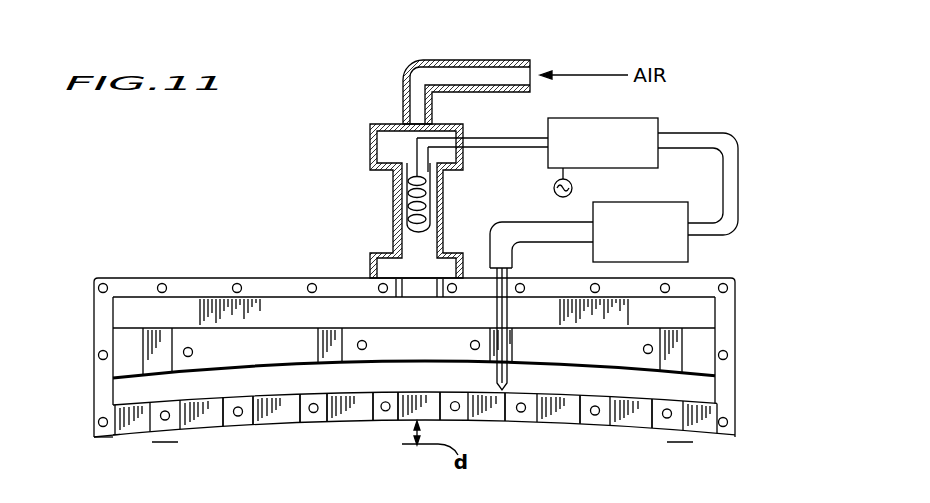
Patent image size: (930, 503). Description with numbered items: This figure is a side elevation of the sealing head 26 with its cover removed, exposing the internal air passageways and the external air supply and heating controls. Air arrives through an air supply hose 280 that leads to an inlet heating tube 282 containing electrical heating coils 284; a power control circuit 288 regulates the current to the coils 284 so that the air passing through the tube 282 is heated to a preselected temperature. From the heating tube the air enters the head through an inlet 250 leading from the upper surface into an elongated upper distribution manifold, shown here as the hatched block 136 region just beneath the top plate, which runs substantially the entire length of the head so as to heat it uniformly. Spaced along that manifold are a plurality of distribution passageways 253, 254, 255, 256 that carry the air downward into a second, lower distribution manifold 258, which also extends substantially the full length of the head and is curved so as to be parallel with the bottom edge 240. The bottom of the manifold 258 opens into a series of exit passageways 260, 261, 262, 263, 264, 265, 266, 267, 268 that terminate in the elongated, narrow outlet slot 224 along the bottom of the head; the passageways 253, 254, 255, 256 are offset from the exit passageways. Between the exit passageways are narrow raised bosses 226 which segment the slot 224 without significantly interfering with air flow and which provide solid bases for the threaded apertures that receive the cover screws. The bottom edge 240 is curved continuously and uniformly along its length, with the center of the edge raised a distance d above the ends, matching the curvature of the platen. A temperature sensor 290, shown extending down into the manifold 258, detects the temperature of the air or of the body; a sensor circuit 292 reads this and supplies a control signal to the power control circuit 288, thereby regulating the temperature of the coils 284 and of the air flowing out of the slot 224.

The sealing head 26 is at (733, 265).
The heater block 136 is at (265, 312).
The outlet slot 224 is at (121, 443).
The raised bosses 226 is at (240, 422).
The bottom edge 240 is at (105, 438).
The inlet 250 is at (410, 287).
The distribution passageway 253 is at (143, 357).
The distribution passageway 254 is at (333, 350).
The distribution passageway 255 is at (490, 355).
The distribution passageway 256 is at (660, 362).
The lower distribution manifold 258 is at (285, 385).
The exit passageway 260 is at (142, 423).
The exit passageway 261 is at (198, 418).
The exit passageway 262 is at (275, 425).
The exit passageway 263 is at (358, 410).
The exit passageway 264 is at (403, 423).
The exit passageway 265 is at (483, 413).
The exit passageway 266 is at (565, 427).
The exit passageway 267 is at (633, 425).
The exit passageway 268 is at (705, 430).
The air supply hose 280 is at (484, 60).
The inlet heating tube 282 is at (395, 188).
The electrical heating coils 284 is at (410, 210).
The power control circuit 288 is at (660, 117).
The temperature sensor 290 is at (502, 392).
The sensor circuit 292 is at (690, 212).